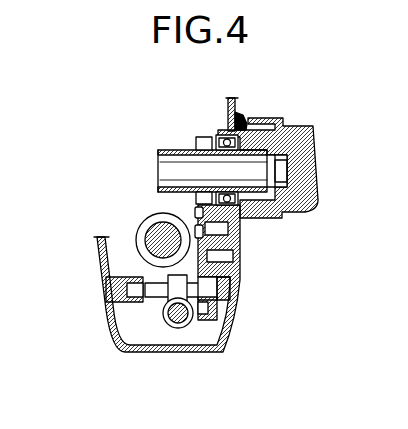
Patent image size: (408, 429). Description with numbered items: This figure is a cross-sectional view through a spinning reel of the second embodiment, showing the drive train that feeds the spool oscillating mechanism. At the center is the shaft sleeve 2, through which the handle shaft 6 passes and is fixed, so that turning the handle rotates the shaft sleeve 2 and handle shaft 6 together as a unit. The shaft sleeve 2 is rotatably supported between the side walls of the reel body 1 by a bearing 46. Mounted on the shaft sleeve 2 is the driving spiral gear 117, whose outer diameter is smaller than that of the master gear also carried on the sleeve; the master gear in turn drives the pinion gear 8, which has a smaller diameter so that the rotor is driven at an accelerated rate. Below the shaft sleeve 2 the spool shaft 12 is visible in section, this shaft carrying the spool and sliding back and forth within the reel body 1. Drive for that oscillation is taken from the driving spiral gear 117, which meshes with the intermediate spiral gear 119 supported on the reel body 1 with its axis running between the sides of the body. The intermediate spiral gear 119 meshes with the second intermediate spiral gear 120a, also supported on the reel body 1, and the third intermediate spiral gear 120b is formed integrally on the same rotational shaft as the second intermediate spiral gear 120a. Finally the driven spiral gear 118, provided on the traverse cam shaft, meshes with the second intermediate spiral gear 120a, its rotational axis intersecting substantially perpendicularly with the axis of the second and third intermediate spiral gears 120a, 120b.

The reel body 1 is at (240, 281).
The shaft sleeve 2 is at (167, 149).
The handle shaft 6 is at (167, 172).
The pinion gear 8 is at (150, 217).
The spool shaft 12 is at (152, 237).
The bearing 46 is at (244, 124).
The driving spiral gear 117 is at (206, 137).
The driven spiral gear 118 is at (180, 328).
The intermediate spiral gear 119 is at (236, 248).
The second intermediate spiral gear 120a is at (224, 302).
The third intermediate spiral gear 120b is at (170, 285).